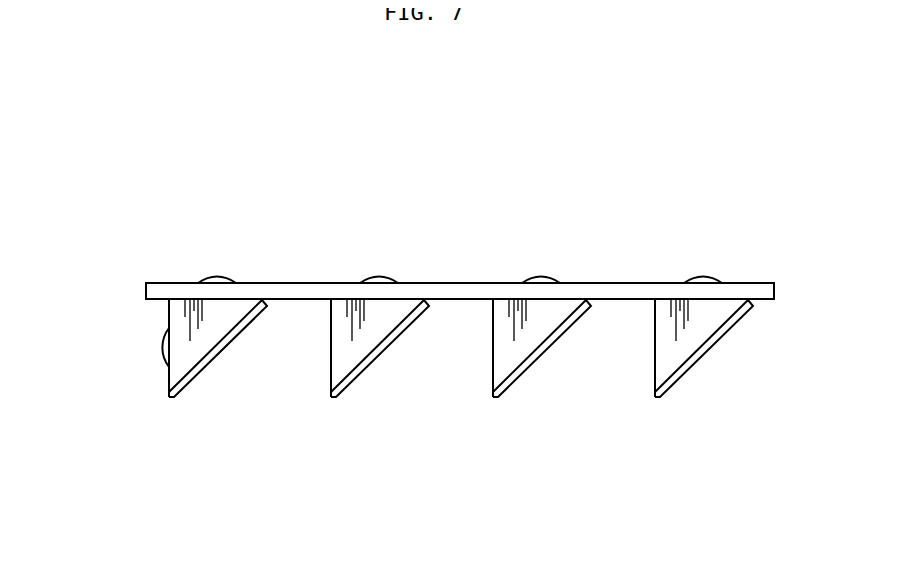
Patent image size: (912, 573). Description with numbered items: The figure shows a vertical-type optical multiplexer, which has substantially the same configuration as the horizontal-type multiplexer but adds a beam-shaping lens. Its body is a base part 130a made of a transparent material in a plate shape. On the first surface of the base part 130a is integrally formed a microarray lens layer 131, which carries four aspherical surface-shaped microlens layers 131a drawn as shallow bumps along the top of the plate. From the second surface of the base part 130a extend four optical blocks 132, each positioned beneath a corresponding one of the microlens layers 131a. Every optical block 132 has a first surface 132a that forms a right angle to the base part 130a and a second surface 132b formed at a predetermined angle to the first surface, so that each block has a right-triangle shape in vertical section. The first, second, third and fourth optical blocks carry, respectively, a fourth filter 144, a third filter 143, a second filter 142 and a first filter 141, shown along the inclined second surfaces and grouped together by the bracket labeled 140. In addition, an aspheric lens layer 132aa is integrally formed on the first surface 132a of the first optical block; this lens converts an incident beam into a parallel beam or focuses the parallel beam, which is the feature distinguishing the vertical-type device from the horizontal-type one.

The base part 130a is at (758, 283).
The microarray lens layer 131 is at (697, 142).
The microlens layers 131a is at (216, 277).
The optical block 132 is at (393, 305).
The first surface 132a is at (167, 313).
The aspheric lens layer 132aa is at (101, 347).
The second surface 132b is at (231, 330).
The light source unit 140 is at (707, 497).
The first filter 141 is at (699, 357).
The second filter 142 is at (537, 357).
The third filter 143 is at (375, 357).
The fourth filter 144 is at (213, 357).